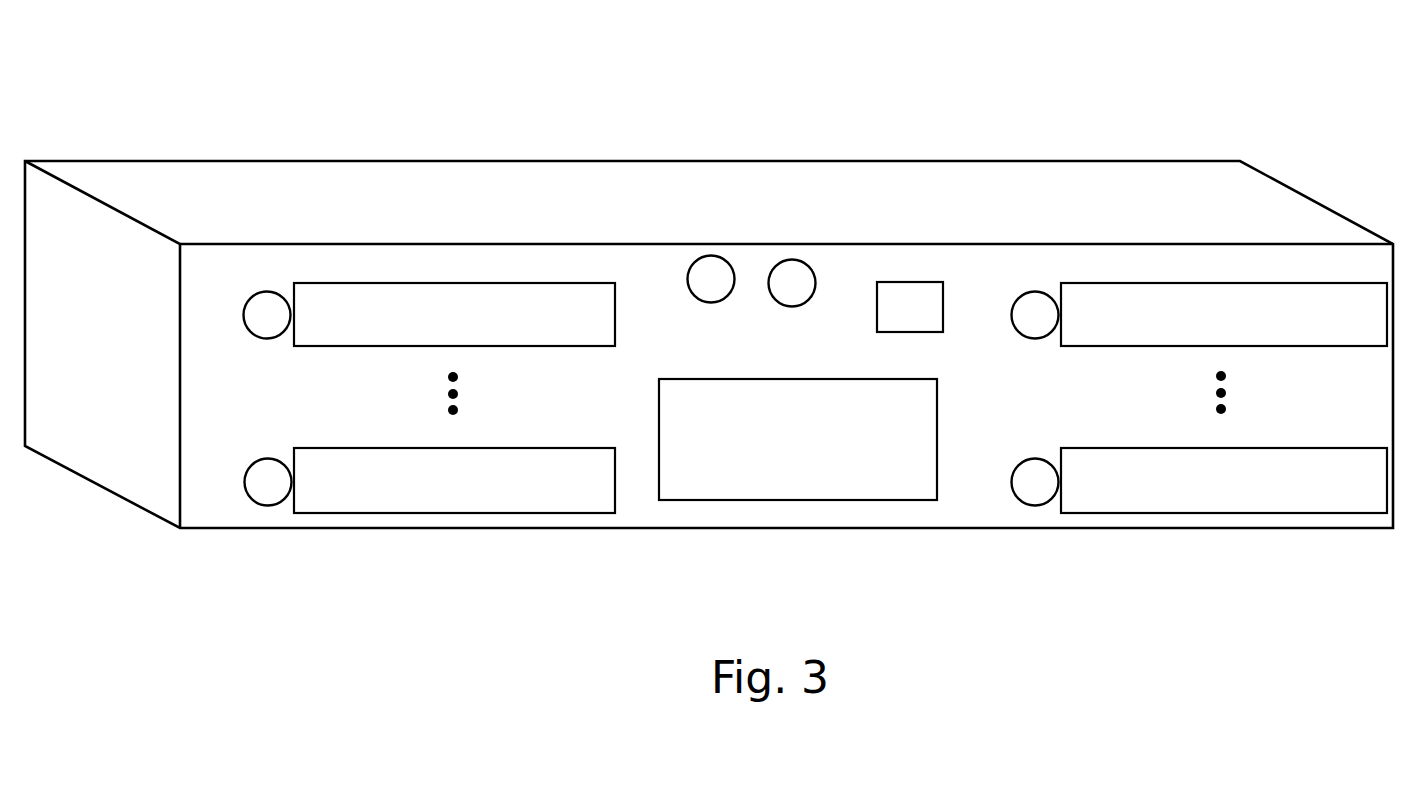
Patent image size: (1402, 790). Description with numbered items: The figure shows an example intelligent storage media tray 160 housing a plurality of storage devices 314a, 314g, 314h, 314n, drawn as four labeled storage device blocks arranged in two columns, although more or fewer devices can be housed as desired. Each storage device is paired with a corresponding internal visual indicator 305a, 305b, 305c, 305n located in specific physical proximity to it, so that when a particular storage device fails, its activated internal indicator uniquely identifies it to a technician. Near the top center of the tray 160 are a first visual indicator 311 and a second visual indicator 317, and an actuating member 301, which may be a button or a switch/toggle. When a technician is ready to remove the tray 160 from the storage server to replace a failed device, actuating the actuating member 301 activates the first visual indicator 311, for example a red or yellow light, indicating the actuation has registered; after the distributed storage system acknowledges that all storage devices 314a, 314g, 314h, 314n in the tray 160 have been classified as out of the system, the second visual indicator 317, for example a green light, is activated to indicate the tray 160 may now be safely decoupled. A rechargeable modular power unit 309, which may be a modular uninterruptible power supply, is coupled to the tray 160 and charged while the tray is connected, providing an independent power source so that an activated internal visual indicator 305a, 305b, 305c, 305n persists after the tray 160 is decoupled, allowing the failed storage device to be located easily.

The intelligent storage media tray 160 is at (657, 160).
The actuating member 301 is at (910, 307).
The internal visual indicator 305a is at (262, 338).
The internal visual indicator 305b is at (1027, 338).
The internal visual indicator 305c is at (265, 459).
The internal visual indicator 305n is at (1030, 459).
The rechargeable modular power unit 309 is at (798, 439).
The first visual indicator 311 is at (706, 302).
The storage device 314a is at (454, 314).
The storage device 314g is at (454, 480).
The storage device 314h is at (1224, 314).
The storage device 314n is at (1224, 480).
The second visual indicator 317 is at (786, 306).